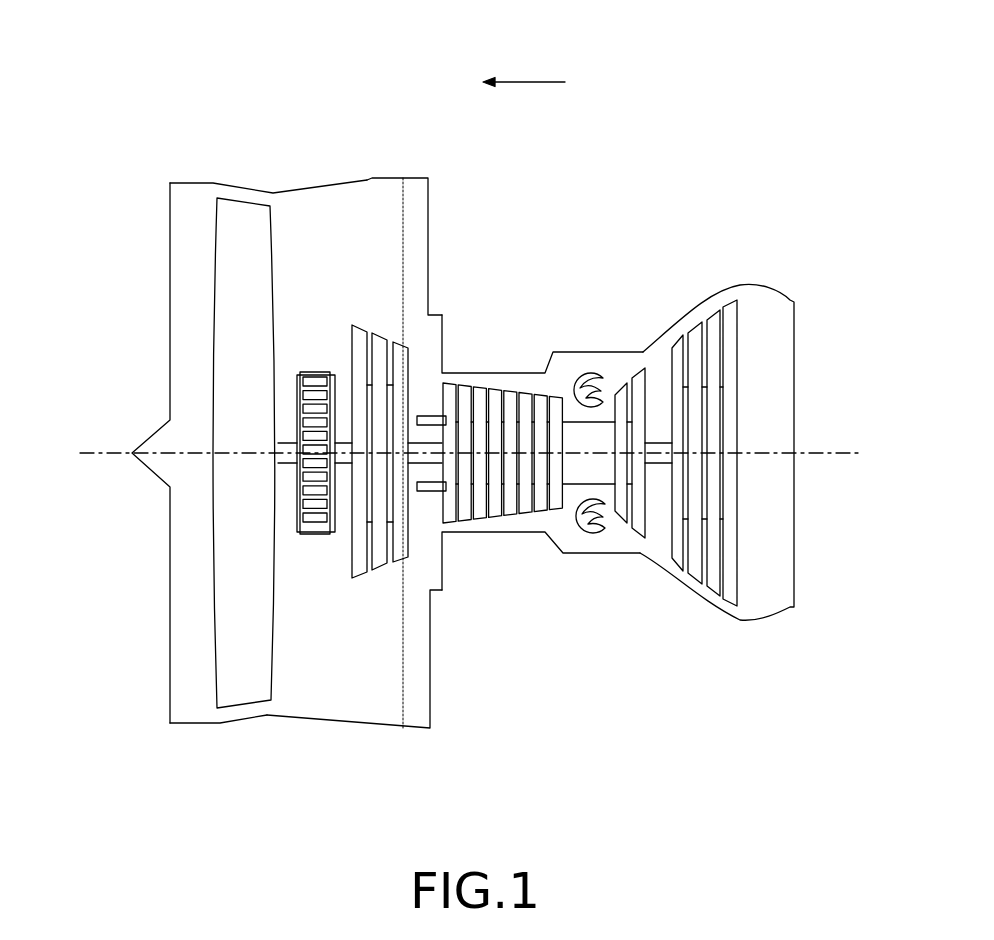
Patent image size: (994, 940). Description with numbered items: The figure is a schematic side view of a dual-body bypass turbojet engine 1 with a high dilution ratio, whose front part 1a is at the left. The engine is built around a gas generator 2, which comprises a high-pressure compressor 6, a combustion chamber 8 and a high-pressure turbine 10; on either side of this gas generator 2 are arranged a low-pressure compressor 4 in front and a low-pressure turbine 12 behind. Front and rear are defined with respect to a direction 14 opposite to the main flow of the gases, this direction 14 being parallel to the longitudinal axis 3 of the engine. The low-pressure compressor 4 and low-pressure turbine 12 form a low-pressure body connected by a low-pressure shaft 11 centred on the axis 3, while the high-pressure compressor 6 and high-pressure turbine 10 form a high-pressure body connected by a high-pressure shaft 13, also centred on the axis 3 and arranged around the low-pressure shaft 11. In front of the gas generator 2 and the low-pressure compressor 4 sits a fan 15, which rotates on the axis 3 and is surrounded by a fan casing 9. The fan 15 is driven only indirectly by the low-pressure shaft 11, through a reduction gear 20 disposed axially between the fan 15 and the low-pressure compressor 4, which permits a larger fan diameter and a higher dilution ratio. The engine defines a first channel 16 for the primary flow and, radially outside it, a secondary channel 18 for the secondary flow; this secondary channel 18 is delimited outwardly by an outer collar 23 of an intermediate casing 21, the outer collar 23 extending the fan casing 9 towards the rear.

The turbojet engine 1 is at (340, 135).
The front part 1a is at (160, 233).
The gas generator 2 is at (498, 547).
The longitudinal axis 3 is at (832, 453).
The low-pressure compressor 4 is at (377, 596).
The high-pressure compressor 6 is at (505, 366).
The combustion chamber 8 is at (588, 542).
The fan casing 9 is at (212, 183).
The high-pressure turbine 10 is at (638, 542).
The low-pressure shaft 11 is at (417, 447).
The low-pressure turbine 12 is at (706, 599).
The high-pressure shaft 13 is at (585, 470).
The direction 14 is at (530, 82).
The fan 15 is at (230, 692).
The first channel 16 is at (412, 507).
The secondary channel 18 is at (348, 271).
The reduction gear 20 is at (317, 534).
The intermediate casing 21 is at (430, 697).
The outer collar 23 is at (365, 180).